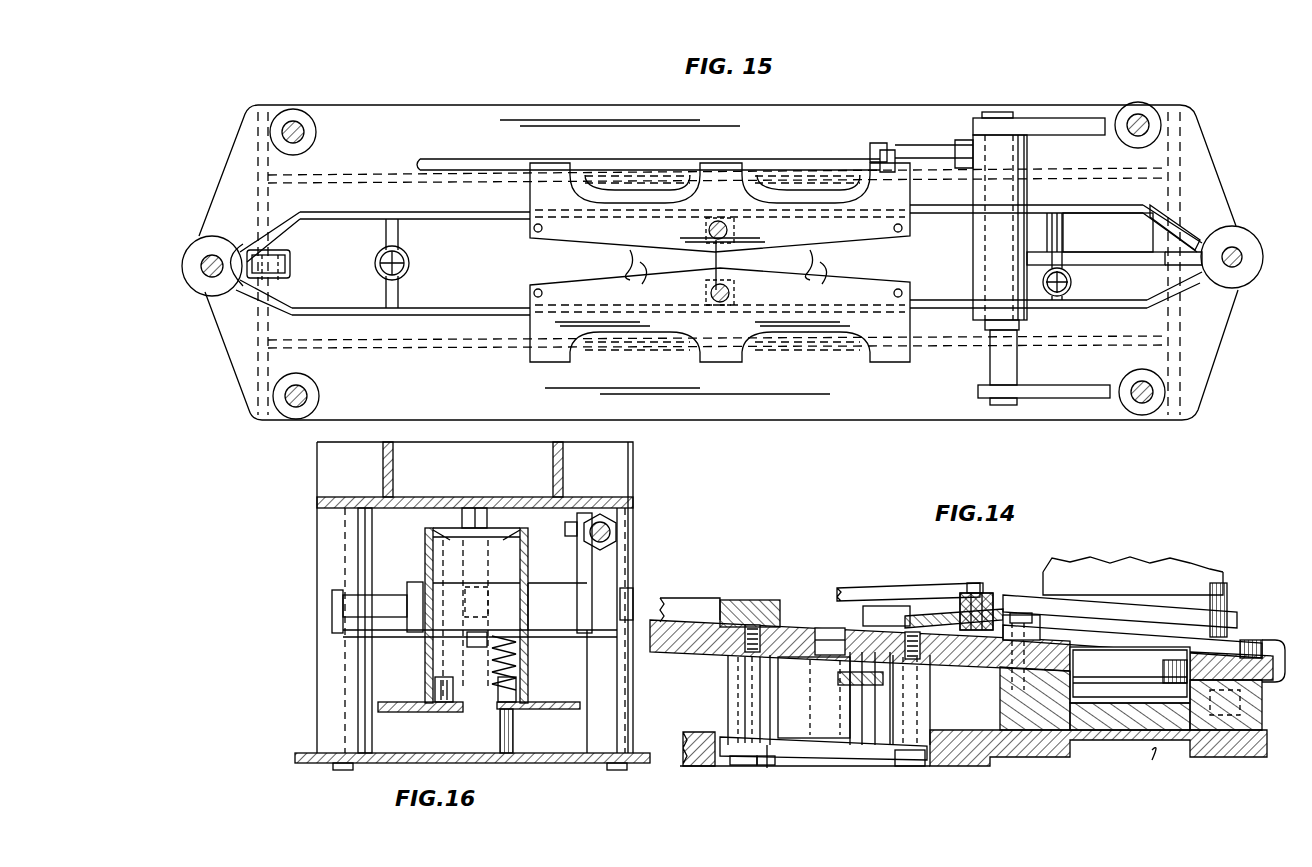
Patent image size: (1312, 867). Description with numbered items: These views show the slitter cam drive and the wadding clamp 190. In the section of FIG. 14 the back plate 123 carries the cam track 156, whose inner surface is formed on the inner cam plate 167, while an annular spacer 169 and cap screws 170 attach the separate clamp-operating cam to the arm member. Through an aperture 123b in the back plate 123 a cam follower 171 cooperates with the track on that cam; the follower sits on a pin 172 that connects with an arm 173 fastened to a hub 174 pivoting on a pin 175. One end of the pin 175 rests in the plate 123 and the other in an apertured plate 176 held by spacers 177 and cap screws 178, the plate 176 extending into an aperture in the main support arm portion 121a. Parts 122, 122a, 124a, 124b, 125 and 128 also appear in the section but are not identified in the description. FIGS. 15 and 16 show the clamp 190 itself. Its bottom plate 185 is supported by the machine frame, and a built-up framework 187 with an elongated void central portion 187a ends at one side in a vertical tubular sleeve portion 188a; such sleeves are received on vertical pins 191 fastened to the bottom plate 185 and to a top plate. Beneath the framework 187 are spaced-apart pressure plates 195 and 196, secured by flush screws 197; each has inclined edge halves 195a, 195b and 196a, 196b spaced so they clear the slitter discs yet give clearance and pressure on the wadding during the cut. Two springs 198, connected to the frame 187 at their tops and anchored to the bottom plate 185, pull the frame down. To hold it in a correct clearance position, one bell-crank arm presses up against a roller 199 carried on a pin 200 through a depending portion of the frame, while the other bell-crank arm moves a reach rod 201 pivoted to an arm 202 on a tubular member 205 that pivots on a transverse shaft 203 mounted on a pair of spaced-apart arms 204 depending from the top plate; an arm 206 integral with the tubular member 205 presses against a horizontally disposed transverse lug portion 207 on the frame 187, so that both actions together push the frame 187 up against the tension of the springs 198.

In FIG. 14, the main support arm portion 121a is at (978, 766).
In FIG. 14, the base block 122 is at (1112, 745).
In FIG. 14, the base block recess 122a is at (1166, 745).
In FIG. 14, the back plate 123 is at (1275, 648).
In FIG. 14, the aperture 123b is at (852, 626).
In FIG. 14, the slide bar portion 124a is at (1130, 675).
In FIG. 14, the slide bar portion 124b is at (1174, 640).
In FIG. 14, the pin 125 is at (1022, 616).
In FIG. 14, the carriage member 128 is at (1148, 568).
In FIG. 14, the cam track 156 is at (702, 596).
In FIG. 14, the inner cam plate 167 is at (757, 600).
In FIG. 14, the annular spacer 169 is at (958, 600).
In FIG. 14, the cap screws 170 is at (978, 586).
In FIG. 14, the cam follower 171 is at (884, 600).
In FIG. 14, the pin 172 is at (912, 678).
In FIG. 14, the arm 173 is at (880, 688).
In FIG. 14, the hub 174 is at (790, 708).
In FIG. 14, the pin 175 is at (822, 762).
In FIG. 14, the apertured plate 176 is at (767, 765).
In FIG. 14, the spacers 177 is at (735, 668).
In FIG. 14, the cap screws 178 is at (740, 765).
In FIG. 16, the bottom plate 185 is at (546, 763).
In FIG. 15, the built up framework 187 is at (370, 208).
In FIG. 16, the built up framework 187 is at (416, 552).
In FIG. 15, the elongated void central portion 187a is at (455, 305).
In FIG. 15, the vertical tubular sleeve portion 188a is at (188, 262).
In FIG. 15, the wadding clamp 190 is at (479, 94).
In FIG. 16, the wadding clamp 190 is at (300, 504).
In FIG. 15, the vertical pins 191 is at (206, 274).
In FIG. 15, the pressure plate 195 is at (302, 100).
In FIG. 16, the pressure plate 195 is at (317, 646).
In FIG. 15, the inclined edge half 195a is at (733, 286).
In FIG. 16, the inclined edge half 195b is at (465, 709).
In FIG. 15, the pressure plate 196 is at (530, 196).
In FIG. 16, the pressure plate 196 is at (558, 702).
In FIG. 15, the inclined edge half 196a is at (635, 252).
In FIG. 16, the inclined edge half 196a is at (497, 709).
In FIG. 15, the inclined edge half 196b is at (732, 267).
In FIG. 15, the flush screws 197 is at (718, 277).
In FIG. 15, the springs 198 is at (408, 264).
In FIG. 15, the roller 199 is at (292, 266).
In FIG. 15, the pin 200 is at (274, 250).
In FIG. 15, the reach rod 201 is at (488, 160).
In FIG. 16, the reach rod 201 is at (618, 532).
In FIG. 15, the arm 202 is at (958, 148).
In FIG. 16, the arm 202 is at (577, 558).
In FIG. 15, the transverse shaft 203 is at (988, 366).
In FIG. 16, the transverse shaft 203 is at (382, 624).
In FIG. 15, the spaced apart arms 204 is at (1056, 128).
In FIG. 16, the spaced apart arms 204 is at (358, 548).
In FIG. 15, the tubular member 205 is at (985, 259).
In FIG. 16, the tubular member 205 is at (555, 635).
In FIG. 15, the arm 206 is at (1104, 243).
In FIG. 16, the arm 206 is at (490, 650).
In FIG. 15, the transverse lug portion 207 is at (1207, 280).
In FIG. 16, the transverse lug portion 207 is at (490, 602).